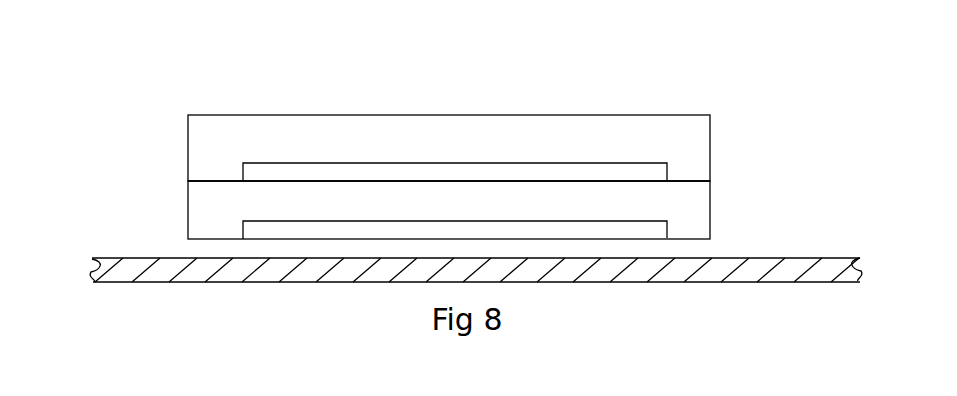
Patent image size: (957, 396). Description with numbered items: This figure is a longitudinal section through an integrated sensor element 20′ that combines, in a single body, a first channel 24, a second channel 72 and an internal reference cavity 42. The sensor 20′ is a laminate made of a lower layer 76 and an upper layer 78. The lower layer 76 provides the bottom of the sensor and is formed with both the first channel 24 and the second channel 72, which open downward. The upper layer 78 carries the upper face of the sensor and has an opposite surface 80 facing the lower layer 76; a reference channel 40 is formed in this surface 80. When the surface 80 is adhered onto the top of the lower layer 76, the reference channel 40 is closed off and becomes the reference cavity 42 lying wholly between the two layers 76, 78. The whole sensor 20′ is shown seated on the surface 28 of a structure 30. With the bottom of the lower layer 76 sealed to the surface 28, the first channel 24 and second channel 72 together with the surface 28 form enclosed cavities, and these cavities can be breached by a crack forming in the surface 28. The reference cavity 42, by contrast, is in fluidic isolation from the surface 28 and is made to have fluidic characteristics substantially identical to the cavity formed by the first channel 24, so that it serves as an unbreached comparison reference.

The sensor element 20′ is at (582, 98).
The upper layer 78 is at (710, 125).
The lower layer 76 is at (710, 207).
The opposite surface 80 is at (686, 181).
The reference channel 40 is at (278, 163).
The reference cavity 42 is at (322, 168).
The first channel 24 is at (371, 196).
The second channel 72 is at (243, 230).
The structure 30 is at (90, 271).
The surface 28 is at (815, 258).